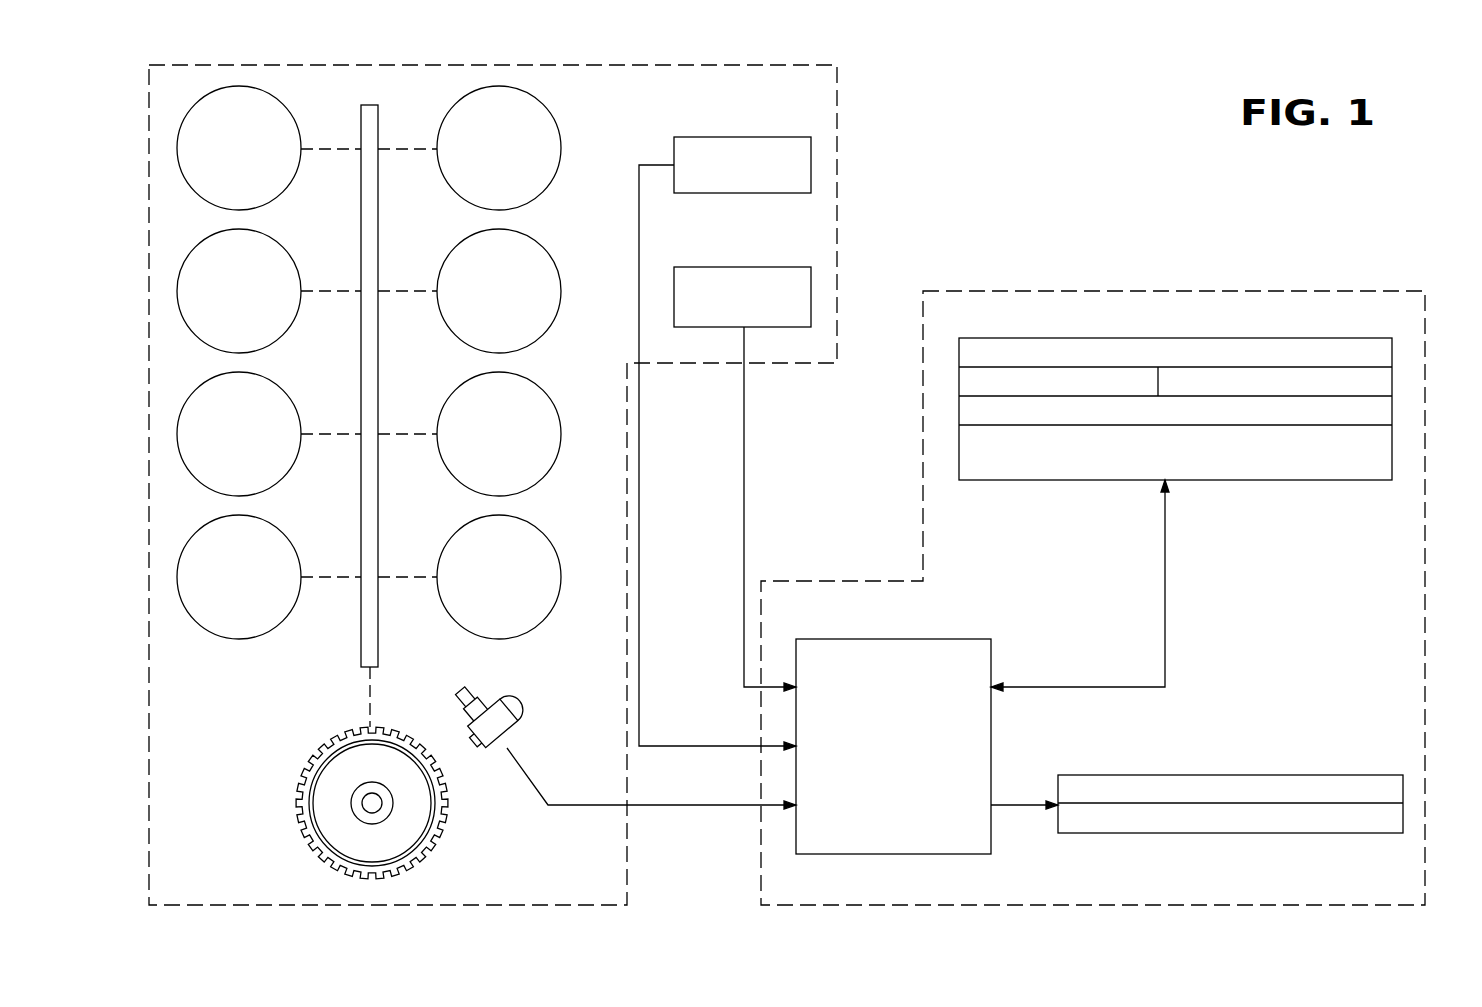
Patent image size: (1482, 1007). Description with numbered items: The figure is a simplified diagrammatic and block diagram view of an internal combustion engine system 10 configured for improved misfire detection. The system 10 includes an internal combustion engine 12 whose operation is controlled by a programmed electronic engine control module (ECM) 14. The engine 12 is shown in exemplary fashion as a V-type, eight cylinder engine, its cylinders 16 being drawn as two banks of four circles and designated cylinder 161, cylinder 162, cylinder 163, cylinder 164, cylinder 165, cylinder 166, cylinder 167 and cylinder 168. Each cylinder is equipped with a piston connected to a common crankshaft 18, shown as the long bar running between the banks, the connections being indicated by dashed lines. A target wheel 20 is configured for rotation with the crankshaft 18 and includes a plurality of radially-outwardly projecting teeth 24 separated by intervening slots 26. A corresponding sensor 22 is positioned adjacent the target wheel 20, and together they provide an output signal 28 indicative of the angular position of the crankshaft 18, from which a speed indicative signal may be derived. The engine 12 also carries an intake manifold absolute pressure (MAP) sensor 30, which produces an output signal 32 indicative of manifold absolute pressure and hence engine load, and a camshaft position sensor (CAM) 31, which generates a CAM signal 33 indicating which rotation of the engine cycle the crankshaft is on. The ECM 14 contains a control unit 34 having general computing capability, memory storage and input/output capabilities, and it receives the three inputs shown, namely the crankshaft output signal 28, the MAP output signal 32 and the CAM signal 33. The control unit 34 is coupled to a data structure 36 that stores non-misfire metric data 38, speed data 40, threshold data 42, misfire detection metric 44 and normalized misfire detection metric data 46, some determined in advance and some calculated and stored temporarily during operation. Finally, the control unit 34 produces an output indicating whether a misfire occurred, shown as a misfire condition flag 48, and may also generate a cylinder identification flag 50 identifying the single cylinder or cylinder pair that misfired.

The internal combustion engine system 10 is at (993, 128).
The internal combustion engine 12 is at (840, 106).
The electronic engine control module (ECM) 14 is at (973, 287).
The cylinders 16 is at (356, 403).
The cylinder 1 161 is at (537, 601).
The cylinder 2 162 is at (200, 585).
The cylinder 3 163 is at (537, 458).
The cylinder 4 164 is at (200, 445).
The cylinder 5 165 is at (537, 315).
The cylinder 6 166 is at (200, 302).
The cylinder 7 167 is at (537, 173).
The cylinder 8 168 is at (200, 160).
The crankshaft 18 is at (367, 108).
The target wheel 20 is at (415, 822).
The sensor 22 is at (475, 712).
The teeth 24 is at (325, 738).
The slots 26 is at (330, 752).
The output signal 28 is at (540, 792).
The intake manifold absolute pressure (MAP) sensor 30 is at (750, 267).
The camshaft position sensor (CAM) 31 is at (750, 137).
The MAP output signal 32 is at (744, 378).
The CAM signal 33 is at (639, 398).
The control unit 34 is at (955, 639).
The data structure 36 is at (1383, 334).
The non-misfire metric data 38 is at (963, 353).
The speed data 40 is at (965, 381).
The threshold data 42 is at (1385, 371).
The misfire detection metric 44 is at (965, 411).
The normalized misfire detection metric data 46 is at (968, 465).
The misfire condition flag 48 is at (1075, 778).
The cylinder identification flag 50 is at (1078, 830).